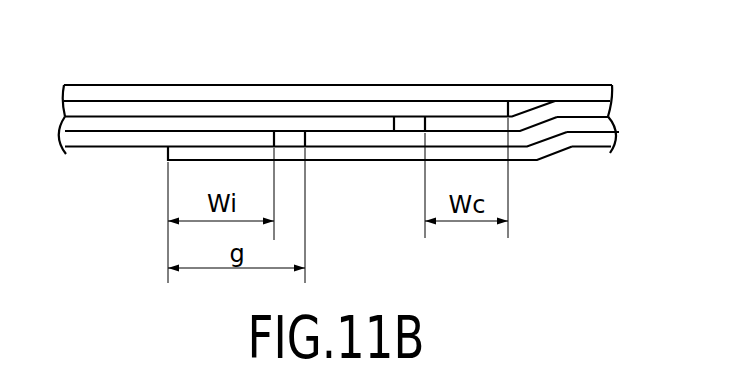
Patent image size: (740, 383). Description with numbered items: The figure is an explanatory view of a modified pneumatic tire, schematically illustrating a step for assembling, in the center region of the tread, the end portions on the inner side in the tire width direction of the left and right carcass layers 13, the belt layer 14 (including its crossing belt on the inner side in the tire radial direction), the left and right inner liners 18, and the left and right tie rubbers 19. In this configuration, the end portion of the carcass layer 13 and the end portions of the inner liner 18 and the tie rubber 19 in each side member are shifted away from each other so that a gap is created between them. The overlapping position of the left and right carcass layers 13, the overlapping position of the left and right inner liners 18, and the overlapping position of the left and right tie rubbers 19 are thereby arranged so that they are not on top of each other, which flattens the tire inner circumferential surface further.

The belt layer 14 is at (476, 85).
The carcass layer 13 is at (66, 117).
The tie rubber 19 is at (113, 131).
The inner liner 18 is at (157, 147).